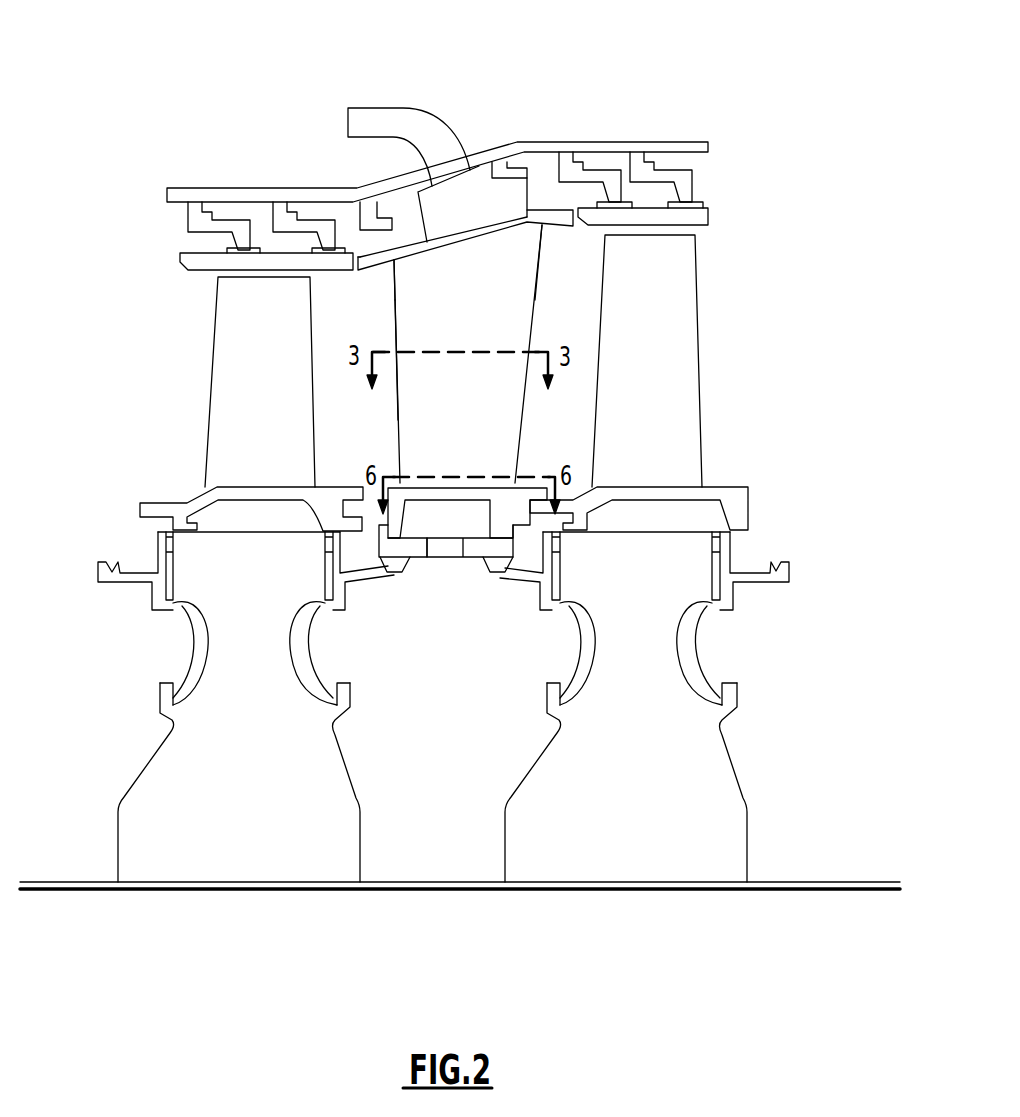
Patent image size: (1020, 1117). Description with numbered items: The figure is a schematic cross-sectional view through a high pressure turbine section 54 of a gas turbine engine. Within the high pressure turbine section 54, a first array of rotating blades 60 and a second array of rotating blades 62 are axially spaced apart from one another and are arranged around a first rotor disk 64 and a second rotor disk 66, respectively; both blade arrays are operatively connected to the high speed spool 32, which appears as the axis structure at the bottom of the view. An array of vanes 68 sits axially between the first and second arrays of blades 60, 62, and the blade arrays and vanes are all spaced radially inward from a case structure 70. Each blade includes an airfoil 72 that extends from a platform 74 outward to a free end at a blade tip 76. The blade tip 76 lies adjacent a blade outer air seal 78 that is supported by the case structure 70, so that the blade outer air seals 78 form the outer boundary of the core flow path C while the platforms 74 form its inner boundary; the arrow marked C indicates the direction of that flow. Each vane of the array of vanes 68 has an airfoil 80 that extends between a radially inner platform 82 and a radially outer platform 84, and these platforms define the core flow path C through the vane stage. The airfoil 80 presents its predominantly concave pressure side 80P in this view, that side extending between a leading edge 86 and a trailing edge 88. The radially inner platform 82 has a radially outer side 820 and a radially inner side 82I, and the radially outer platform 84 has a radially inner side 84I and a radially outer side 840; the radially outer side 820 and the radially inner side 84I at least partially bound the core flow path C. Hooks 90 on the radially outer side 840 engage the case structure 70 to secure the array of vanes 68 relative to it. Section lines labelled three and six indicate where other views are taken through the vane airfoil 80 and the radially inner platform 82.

The high speed spool 32 is at (832, 893).
The high pressure turbine section 54 is at (790, 77).
The first array of rotating blades 60 is at (150, 383).
The second array of rotating blades 62 is at (758, 303).
The core flow path C is at (100, 398).
The first rotor disk 64 is at (148, 760).
The second rotor disk 66 is at (737, 777).
The array of vanes 68 is at (383, 330).
The case structure 70 is at (567, 142).
The airfoil 72 is at (227, 433).
The platform 74 is at (170, 487).
The blade tip 76 is at (232, 270).
The blade outer air seal 78 is at (197, 257).
The airfoil 80 is at (417, 385).
The pressure side 80P is at (413, 420).
The radially inner platform 82 is at (530, 490).
The radially outer side 820 is at (425, 480).
The radially inner side 82I is at (425, 503).
The radially outer platform 84 is at (560, 218).
The radially outer side 840 is at (497, 228).
The radially inner side 84I is at (418, 262).
The leading edge 86 is at (397, 293).
The trailing edge 88 is at (548, 303).
The hooks 90 is at (392, 210).